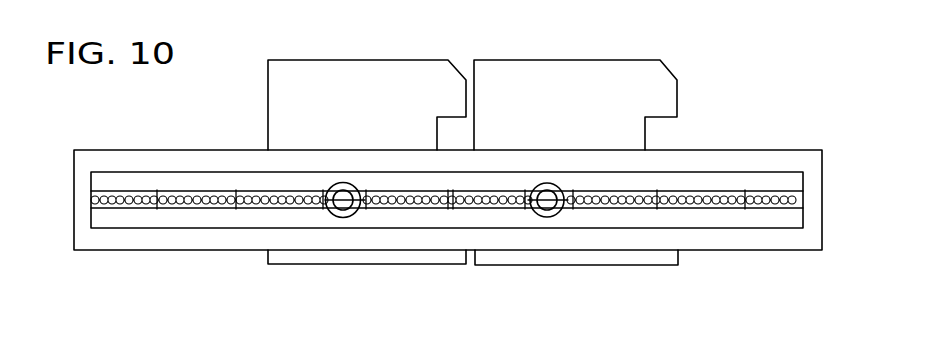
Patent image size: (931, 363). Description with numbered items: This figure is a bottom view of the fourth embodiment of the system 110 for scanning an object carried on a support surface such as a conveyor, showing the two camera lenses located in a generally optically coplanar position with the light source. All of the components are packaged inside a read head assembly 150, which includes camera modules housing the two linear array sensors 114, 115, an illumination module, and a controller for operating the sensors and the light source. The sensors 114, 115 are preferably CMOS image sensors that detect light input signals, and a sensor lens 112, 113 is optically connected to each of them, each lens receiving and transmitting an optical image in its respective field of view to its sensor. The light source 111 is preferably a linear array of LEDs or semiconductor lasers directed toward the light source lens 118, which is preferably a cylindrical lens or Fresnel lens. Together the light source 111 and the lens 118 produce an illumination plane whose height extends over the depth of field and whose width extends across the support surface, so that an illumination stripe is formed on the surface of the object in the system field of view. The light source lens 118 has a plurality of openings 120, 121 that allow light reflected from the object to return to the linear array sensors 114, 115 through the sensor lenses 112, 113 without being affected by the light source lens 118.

The system 110 is at (708, 77).
The light source 111 is at (690, 196).
The sensor lens 112 is at (346, 210).
The sensor lens 113 is at (548, 212).
The linear array sensor 114 is at (353, 62).
The linear array sensor 115 is at (568, 60).
The light source lens 118 is at (697, 228).
The opening 120 is at (328, 210).
The opening 121 is at (536, 212).
The read head assembly 150 is at (104, 251).